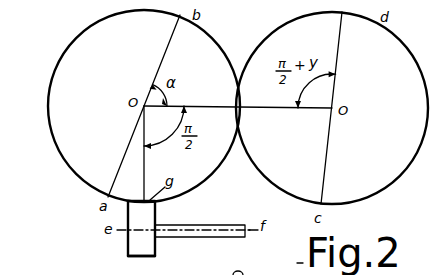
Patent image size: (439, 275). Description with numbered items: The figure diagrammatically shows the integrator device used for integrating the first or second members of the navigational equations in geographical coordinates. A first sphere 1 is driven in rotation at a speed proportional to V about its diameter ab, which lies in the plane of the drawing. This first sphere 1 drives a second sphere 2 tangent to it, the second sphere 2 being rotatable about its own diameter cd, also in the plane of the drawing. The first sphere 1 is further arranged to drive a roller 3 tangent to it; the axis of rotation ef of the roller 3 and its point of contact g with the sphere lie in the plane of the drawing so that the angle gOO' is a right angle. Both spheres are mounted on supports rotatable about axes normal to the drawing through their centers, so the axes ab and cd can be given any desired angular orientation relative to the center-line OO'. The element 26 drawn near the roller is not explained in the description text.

The first wheel (circle) 1 is at (75, 57).
The second wheel (circle) 2 is at (398, 50).
The slide block with rod 3 is at (148, 218).
The lower block end 26 is at (143, 273).